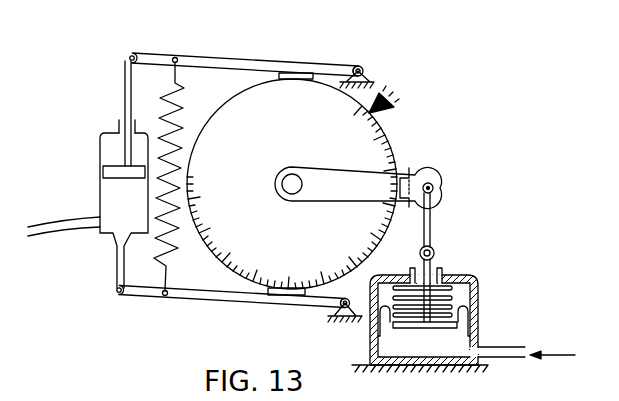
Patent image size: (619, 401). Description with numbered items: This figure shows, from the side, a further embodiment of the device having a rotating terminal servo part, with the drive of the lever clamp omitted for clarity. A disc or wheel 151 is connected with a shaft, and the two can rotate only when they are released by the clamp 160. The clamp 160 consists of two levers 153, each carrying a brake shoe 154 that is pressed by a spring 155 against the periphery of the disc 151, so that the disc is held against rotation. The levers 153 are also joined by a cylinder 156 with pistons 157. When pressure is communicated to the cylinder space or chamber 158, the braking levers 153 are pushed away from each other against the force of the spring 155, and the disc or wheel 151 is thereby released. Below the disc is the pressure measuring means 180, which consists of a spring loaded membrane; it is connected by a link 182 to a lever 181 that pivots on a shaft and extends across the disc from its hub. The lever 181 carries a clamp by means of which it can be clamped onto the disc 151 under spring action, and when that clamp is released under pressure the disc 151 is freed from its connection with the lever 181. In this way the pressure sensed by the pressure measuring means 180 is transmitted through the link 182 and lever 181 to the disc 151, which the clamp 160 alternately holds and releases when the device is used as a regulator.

The disc or wheel 151 is at (357, 150).
The levers 153 is at (218, 64).
The brake shoe 154 is at (285, 293).
The spring 155 is at (167, 117).
The cylinder 156 is at (100, 188).
The pistons 157 is at (102, 167).
The cylinder space or chamber 158 is at (113, 219).
The clamp 160 is at (256, 30).
The pressure measuring means 180 is at (490, 293).
The lever 181 is at (380, 190).
The link 182 is at (432, 223).